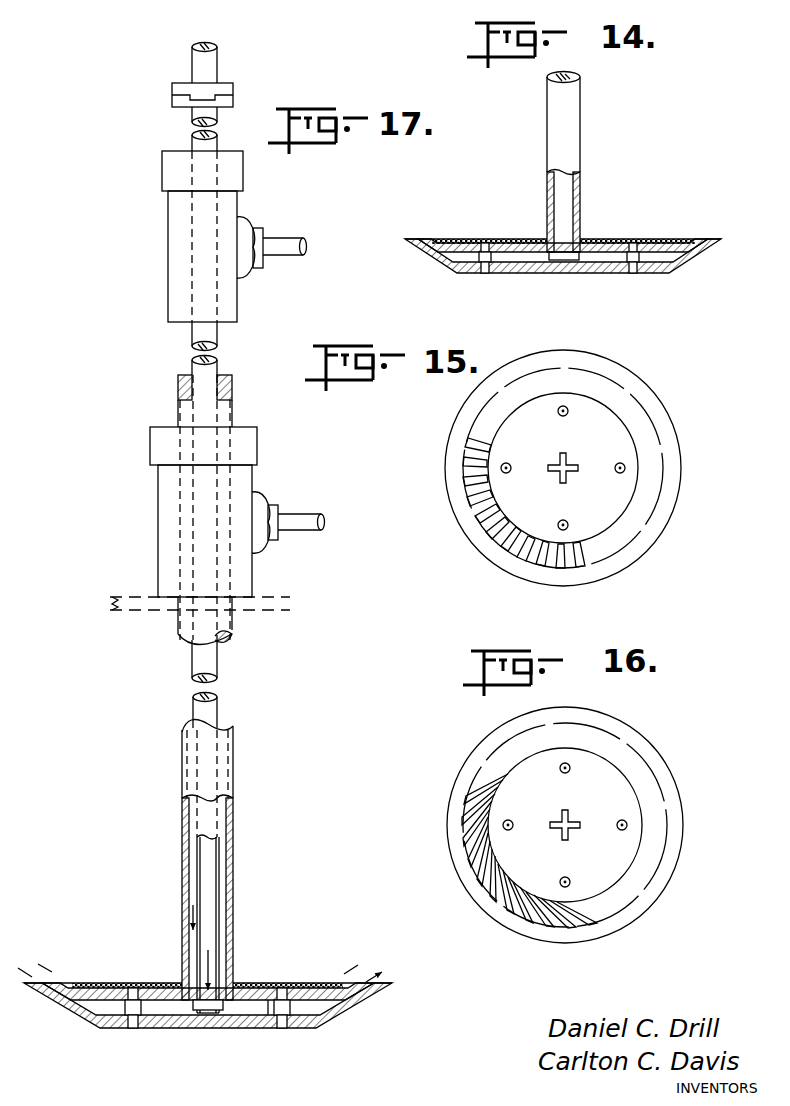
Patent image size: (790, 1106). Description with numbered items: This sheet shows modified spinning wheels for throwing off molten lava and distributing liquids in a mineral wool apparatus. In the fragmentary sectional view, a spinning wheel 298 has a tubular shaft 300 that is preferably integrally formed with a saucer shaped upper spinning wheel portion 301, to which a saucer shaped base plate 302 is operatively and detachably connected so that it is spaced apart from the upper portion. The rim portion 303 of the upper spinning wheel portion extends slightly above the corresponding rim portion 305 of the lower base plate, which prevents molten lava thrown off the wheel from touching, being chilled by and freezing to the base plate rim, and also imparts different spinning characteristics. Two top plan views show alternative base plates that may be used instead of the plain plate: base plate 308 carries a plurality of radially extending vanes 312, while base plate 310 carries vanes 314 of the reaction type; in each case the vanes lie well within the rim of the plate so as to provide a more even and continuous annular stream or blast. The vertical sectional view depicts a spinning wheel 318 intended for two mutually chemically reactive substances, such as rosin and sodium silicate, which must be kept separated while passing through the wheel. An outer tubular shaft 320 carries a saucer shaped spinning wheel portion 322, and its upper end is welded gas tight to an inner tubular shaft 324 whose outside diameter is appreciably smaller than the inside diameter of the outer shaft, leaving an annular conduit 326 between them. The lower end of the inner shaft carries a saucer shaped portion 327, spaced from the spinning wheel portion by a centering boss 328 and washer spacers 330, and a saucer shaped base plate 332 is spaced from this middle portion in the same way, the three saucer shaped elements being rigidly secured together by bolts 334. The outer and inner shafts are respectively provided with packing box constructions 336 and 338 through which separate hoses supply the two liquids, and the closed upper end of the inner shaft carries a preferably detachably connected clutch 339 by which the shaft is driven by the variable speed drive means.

In FIG. 14, the spinning wheel 298 is at (546, 191).
In FIG. 14, the shaft 300 is at (580, 135).
In FIG. 14, the upper spinning wheel portion 301 is at (602, 241).
In FIG. 14, the base plate 302 is at (502, 273).
In FIG. 14, the rim portion 303 is at (681, 241).
In FIG. 14, the rim portion 305 is at (712, 240).
In FIG. 15, the base plate 308 is at (668, 408).
In FIG. 16, the base plate 310 is at (660, 750).
In FIG. 15, the radially extending vanes 312 is at (540, 560).
In FIG. 16, the vanes 314 is at (535, 905).
In FIG. 17, the spinning wheel 318 is at (181, 830).
In FIG. 17, the outer tubular shaft 320 is at (178, 630).
In FIG. 17, the spinning wheel portion 322 is at (257, 985).
In FIG. 17, the inner tubular shaft 324 is at (192, 664).
In FIG. 17, the annular conduit 326 is at (226, 642).
In FIG. 17, the saucer shaped portion 327 is at (160, 1006).
In FIG. 17, the centering boss 328 is at (230, 1012).
In FIG. 17, the washer spacers 330 is at (268, 1000).
In FIG. 17, the base plate 332 is at (107, 1028).
In FIG. 17, the bolts 334 is at (288, 1028).
In FIG. 17, the packing box construction 336 is at (237, 202).
In FIG. 17, the packing box construction 338 is at (252, 475).
In FIG. 17, the clutch 339 is at (233, 93).